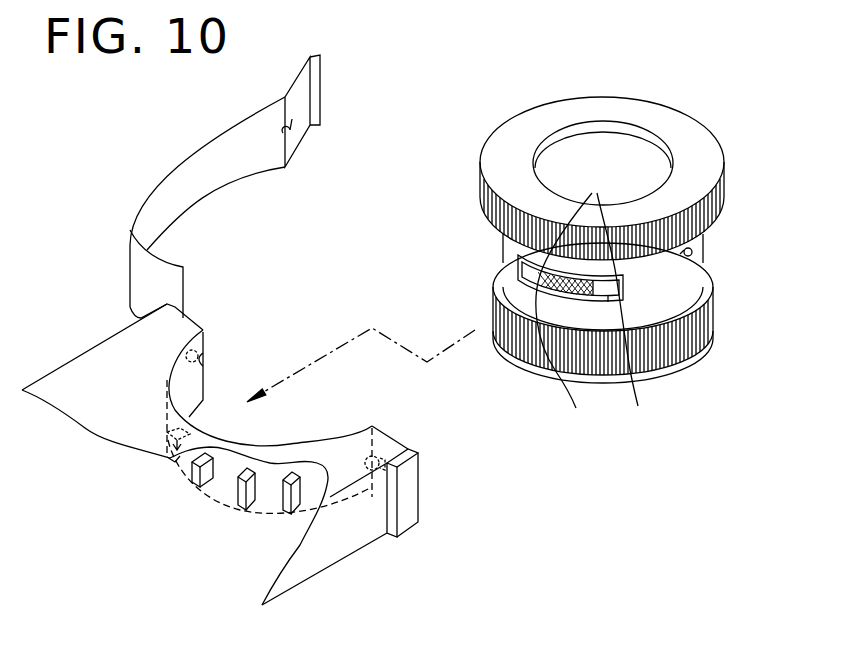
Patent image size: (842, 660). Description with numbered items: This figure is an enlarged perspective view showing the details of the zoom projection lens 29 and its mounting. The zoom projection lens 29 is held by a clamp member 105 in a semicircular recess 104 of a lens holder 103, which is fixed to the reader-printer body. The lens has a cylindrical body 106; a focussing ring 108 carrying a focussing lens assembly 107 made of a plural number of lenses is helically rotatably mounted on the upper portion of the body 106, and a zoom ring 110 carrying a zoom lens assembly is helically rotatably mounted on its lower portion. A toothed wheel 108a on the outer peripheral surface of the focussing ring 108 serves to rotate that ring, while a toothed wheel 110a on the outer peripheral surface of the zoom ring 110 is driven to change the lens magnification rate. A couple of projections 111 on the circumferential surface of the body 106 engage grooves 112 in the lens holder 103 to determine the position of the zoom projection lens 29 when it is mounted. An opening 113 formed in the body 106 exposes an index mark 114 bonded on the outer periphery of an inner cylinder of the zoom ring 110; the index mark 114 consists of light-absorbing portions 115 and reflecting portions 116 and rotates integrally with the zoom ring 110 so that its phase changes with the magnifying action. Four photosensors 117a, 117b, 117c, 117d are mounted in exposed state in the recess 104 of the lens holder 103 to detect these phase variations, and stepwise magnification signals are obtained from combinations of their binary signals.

The zoom projection lens 29 is at (655, 95).
The lens holder 103 is at (83, 368).
The semicircular recess 104 is at (287, 443).
The clamp member 105 is at (219, 177).
The cylindrical body 106 is at (664, 360).
The focussing lens assembly 107 is at (592, 147).
The focussing ring 108 is at (710, 132).
The toothed wheel 108a is at (727, 193).
The zoom ring 110 is at (698, 302).
The toothed wheel 110a is at (552, 370).
The projections 111 is at (694, 251).
The grooves 112 is at (203, 363).
The opening 113 is at (522, 283).
The index mark 114 is at (590, 292).
The light-absorbing portions 115 is at (587, 290).
The reflecting portions 116 is at (608, 302).
The photosensor 117a is at (182, 466).
The photosensor 117b is at (207, 488).
The photosensor 117c is at (240, 508).
The photosensor 117d is at (288, 512).